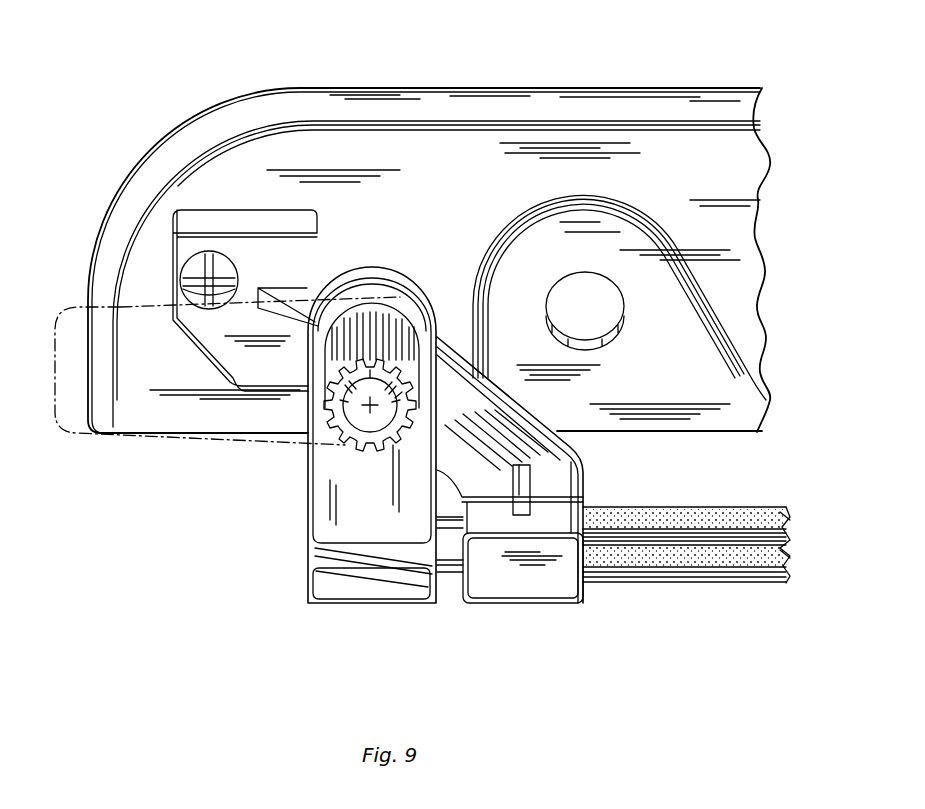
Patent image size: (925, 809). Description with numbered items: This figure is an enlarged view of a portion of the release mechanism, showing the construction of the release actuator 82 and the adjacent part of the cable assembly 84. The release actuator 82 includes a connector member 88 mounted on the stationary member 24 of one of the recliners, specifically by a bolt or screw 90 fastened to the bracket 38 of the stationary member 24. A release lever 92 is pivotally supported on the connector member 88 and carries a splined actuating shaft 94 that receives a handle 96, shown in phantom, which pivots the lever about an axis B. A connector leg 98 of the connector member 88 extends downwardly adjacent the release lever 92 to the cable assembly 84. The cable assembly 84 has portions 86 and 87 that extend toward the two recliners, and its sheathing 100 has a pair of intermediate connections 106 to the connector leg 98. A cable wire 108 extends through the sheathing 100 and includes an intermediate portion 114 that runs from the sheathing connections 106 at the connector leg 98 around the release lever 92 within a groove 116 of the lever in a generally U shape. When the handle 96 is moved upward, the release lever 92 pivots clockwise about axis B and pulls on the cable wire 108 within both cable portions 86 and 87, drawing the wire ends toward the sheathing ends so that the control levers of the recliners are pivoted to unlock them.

The stationary member 24 is at (586, 77).
The bracket 38 is at (626, 106).
The release actuator 82 is at (404, 236).
The cable assembly 84 is at (703, 554).
The cable portion 86 is at (727, 565).
The cable portion 87 is at (727, 518).
The connector member 88 is at (300, 236).
The bolt or screw 90 is at (183, 264).
The release lever 92 is at (348, 495).
The splined actuating shaft 94 is at (400, 338).
The handle 96 is at (100, 440).
The connector leg 98 is at (585, 489).
The sheathing 100 is at (782, 563).
The intermediate connections 106 is at (589, 568).
The cable wire 108 is at (448, 582).
The intermediate portion 114 is at (357, 572).
The groove 116 is at (345, 548).
The axis B is at (398, 388).